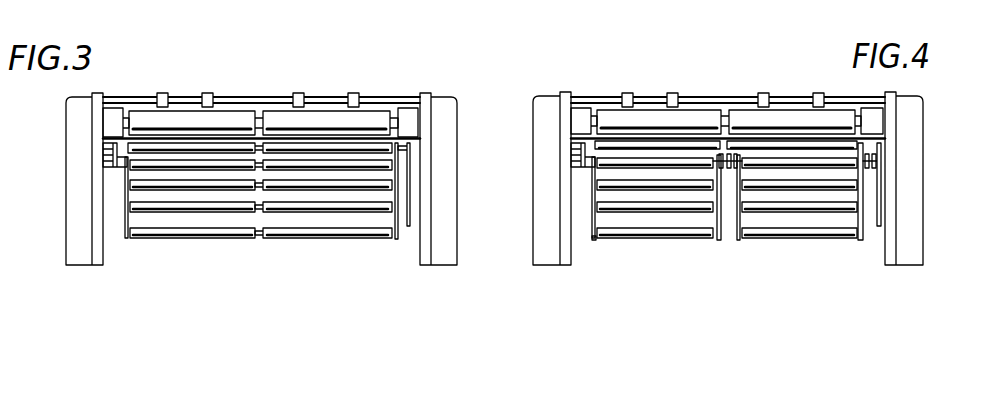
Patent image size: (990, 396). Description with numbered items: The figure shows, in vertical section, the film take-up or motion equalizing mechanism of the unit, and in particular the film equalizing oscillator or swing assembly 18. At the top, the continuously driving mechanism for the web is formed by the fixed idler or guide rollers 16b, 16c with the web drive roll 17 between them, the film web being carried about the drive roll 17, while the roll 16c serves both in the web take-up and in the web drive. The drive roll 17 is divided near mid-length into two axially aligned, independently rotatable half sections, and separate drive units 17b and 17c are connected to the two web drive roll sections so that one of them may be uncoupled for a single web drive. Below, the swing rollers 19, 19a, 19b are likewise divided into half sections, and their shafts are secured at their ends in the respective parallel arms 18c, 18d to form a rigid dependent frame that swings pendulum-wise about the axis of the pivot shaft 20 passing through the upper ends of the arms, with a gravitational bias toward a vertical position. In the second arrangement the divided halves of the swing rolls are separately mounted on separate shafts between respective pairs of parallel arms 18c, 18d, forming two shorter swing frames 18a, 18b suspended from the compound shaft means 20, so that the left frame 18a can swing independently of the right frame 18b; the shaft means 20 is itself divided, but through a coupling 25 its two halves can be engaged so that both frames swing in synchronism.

In FIG. 3, the fixed idler or guide roller 16b is at (397, 110).
In FIG. 3, the fixed idler or guide roller 16c is at (150, 145).
In FIG. 3, the web drive roll 17 is at (242, 117).
In FIG. 4, the web drive roll 17 is at (743, 115).
In FIG. 3, the drive unit 17b is at (116, 113).
In FIG. 4, the drive unit 17b is at (582, 113).
In FIG. 3, the drive unit 17c is at (402, 113).
In FIG. 4, the drive unit 17c is at (868, 110).
In FIG. 3, the film equalizing oscillator or swing assembly 18 is at (234, 229).
In FIG. 4, the swing frame 18a is at (594, 200).
In FIG. 4, the swing frame 18b is at (868, 227).
In FIG. 3, the parallel arm 18c is at (125, 242).
In FIG. 4, the parallel arm 18c is at (592, 240).
In FIG. 3, the parallel arm 18d is at (404, 218).
In FIG. 4, the parallel arm 18d is at (721, 170).
In FIG. 3, the swing roller 19 is at (184, 183).
In FIG. 4, the swing roller 19 is at (719, 167).
In FIG. 3, the swing roller 19a is at (226, 208).
In FIG. 4, the swing roller 19a is at (715, 208).
In FIG. 3, the swing roller 19b is at (290, 233).
In FIG. 4, the swing roller 19b is at (663, 235).
In FIG. 3, the pivot shaft 20 is at (397, 235).
In FIG. 4, the pivot shaft 20 is at (877, 168).
In FIG. 4, the coupling 25 is at (738, 165).